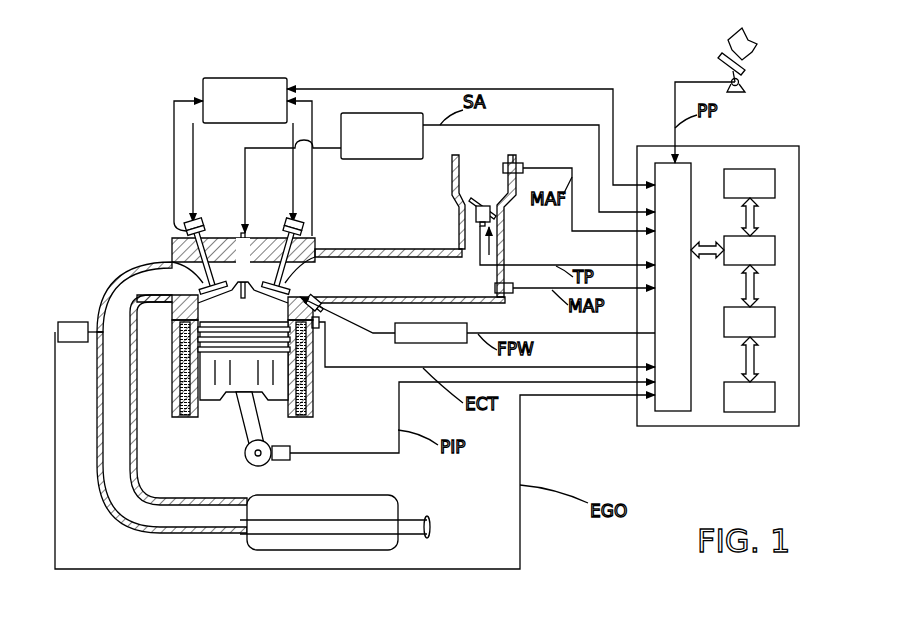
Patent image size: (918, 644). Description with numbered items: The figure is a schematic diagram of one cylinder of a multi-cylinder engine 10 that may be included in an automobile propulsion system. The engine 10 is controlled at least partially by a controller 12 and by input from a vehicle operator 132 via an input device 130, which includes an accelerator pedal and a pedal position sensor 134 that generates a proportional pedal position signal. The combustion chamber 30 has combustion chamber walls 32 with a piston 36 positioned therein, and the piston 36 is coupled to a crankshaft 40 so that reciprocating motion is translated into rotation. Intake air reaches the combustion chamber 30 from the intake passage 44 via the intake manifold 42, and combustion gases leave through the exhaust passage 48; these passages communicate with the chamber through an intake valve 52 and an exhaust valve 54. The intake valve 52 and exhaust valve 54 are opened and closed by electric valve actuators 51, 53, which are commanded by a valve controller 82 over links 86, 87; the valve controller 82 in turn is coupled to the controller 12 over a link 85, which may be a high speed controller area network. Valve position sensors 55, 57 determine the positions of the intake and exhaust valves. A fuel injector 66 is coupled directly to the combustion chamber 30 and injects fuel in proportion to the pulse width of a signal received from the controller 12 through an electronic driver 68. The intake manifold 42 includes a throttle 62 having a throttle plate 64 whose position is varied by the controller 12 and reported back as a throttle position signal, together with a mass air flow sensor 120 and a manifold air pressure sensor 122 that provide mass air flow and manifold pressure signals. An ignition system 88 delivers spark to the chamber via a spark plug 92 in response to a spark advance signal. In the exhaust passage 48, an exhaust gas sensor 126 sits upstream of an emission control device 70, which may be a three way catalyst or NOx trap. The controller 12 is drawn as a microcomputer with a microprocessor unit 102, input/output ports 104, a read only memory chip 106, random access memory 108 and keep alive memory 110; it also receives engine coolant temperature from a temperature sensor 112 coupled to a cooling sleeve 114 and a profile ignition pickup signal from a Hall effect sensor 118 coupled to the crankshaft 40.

The engine 10 is at (127, 207).
The controller 12 is at (797, 146).
The combustion chamber 30 is at (243, 305).
The combustion chamber walls 32 is at (202, 410).
The piston 36 is at (230, 383).
The crankshaft 40 is at (253, 467).
The intake manifold 42 is at (492, 188).
The intake passage 44 is at (447, 286).
The exhaust passage 48 is at (158, 289).
The electric valve actuator 51 is at (288, 225).
The intake valve 52 is at (286, 286).
The electric valve actuator 53 is at (197, 228).
The exhaust valve 54 is at (215, 297).
The valve position sensor 55 is at (300, 238).
The valve position sensor 57 is at (185, 233).
The throttle 62 is at (500, 213).
The throttle plate 64 is at (462, 212).
The fuel injector 66 is at (322, 326).
The electronic driver 68 is at (405, 343).
The emission control device 70 is at (375, 497).
The valve controller 82 is at (212, 78).
The link 85 is at (405, 89).
The link 86 is at (293, 185).
The link 87 is at (193, 173).
The ignition system 88 is at (360, 160).
The spark plug 92 is at (245, 236).
The microprocessor unit 102 is at (777, 250).
The input/output ports 104 is at (693, 168).
The read only memory chip 106 is at (777, 183).
The random access memory 108 is at (777, 320).
The keep alive memory 110 is at (777, 392).
The temperature sensor 112 is at (322, 330).
The cooling sleeve 114 is at (312, 385).
The Hall effect sensor 118 is at (283, 462).
The mass air flow sensor 120 is at (523, 162).
The manifold air pressure sensor 122 is at (512, 295).
The exhaust gas sensor 126 is at (58, 325).
The input device 130 is at (720, 63).
The vehicle operator 132 is at (757, 53).
The pedal position sensor 134 is at (743, 85).